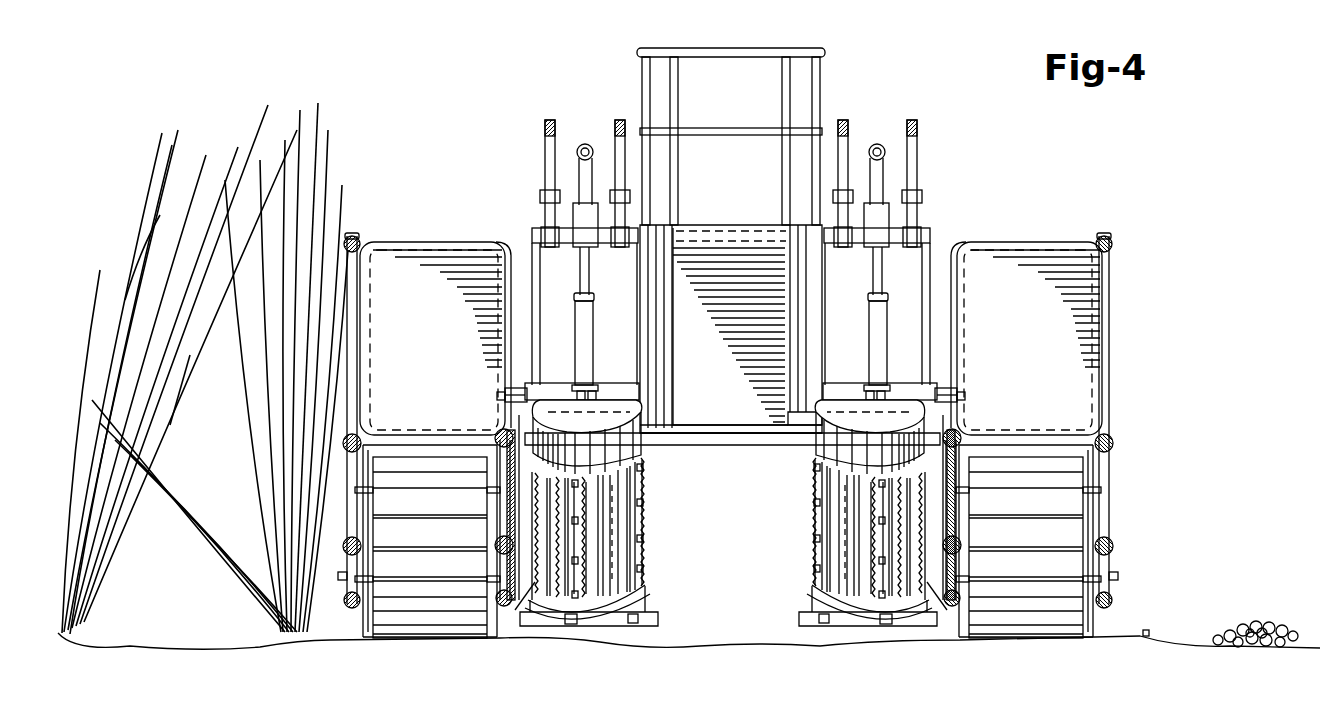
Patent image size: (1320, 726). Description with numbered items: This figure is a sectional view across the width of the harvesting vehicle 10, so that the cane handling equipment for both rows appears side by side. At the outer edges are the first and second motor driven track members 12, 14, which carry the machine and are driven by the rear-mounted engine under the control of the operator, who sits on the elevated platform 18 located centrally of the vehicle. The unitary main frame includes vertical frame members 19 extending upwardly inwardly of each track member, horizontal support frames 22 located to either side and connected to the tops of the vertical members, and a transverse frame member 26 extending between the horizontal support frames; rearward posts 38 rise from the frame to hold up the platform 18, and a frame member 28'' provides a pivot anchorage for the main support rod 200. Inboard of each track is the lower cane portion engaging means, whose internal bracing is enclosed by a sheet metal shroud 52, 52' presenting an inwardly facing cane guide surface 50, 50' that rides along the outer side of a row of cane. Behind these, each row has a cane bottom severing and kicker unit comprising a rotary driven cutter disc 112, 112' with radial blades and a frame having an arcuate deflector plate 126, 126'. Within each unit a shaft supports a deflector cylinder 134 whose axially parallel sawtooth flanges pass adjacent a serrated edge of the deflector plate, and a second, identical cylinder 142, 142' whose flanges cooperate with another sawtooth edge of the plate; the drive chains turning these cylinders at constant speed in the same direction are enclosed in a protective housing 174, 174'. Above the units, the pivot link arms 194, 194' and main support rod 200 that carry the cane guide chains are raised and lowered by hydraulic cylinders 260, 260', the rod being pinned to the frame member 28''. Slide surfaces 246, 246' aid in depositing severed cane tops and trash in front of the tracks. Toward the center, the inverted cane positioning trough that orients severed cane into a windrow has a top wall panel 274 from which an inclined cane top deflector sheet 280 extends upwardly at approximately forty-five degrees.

The vehicle 10 is at (733, 362).
The track member 12 is at (372, 622).
The track member 14 is at (1085, 625).
The elevated platform 18 is at (722, 225).
The vertical frame member 19 is at (525, 496).
The horizontal support frame 22 is at (517, 397).
The transverse frame member 26 is at (705, 442).
The frame member 28'' is at (822, 325).
The rearward posts 38 is at (538, 293).
The cane guide surface 50 is at (434, 533).
The lower side panel 50' is at (1022, 533).
The sheet metal shroud 52 is at (355, 420).
The side rail 52' is at (1133, 420).
The cutter disc 112 is at (579, 628).
The base plate 112' is at (883, 628).
The arcuate deflector plate 126 is at (619, 530).
The stripper drum 126' is at (840, 530).
The deflector cylinder 134 is at (572, 502).
The cylinder 142 is at (626, 528).
The serrated strip 142' is at (840, 528).
The protective housing 174 is at (587, 437).
The drum hood 174' is at (870, 437).
The guide rod 194 is at (558, 183).
The pivot link arms 194' is at (909, 165).
The piston rod eye 200 is at (590, 155).
The upper side panel 246 is at (435, 338).
The slide surface 246' is at (1026, 338).
The hydraulic cylinder 260 is at (602, 335).
The hydraulic cylinder 260' is at (856, 346).
The top wall panel 274 is at (771, 442).
The cane top deflector sheet 280 is at (762, 319).